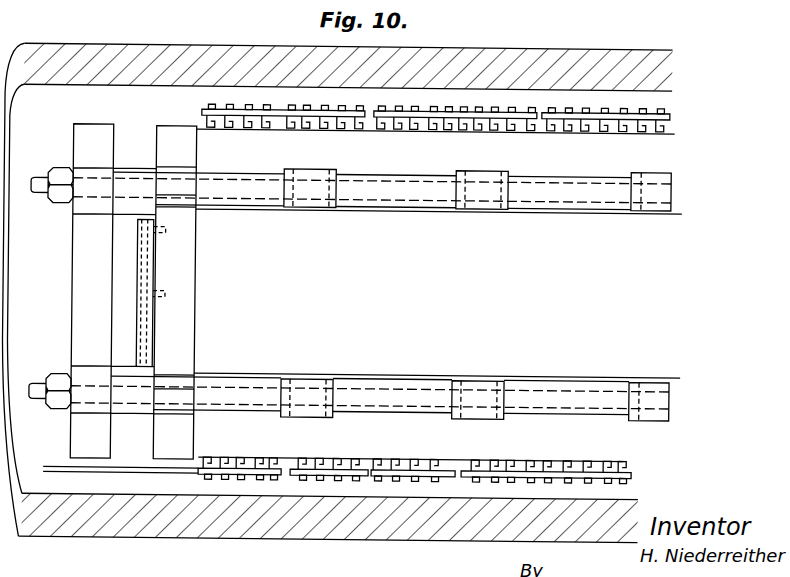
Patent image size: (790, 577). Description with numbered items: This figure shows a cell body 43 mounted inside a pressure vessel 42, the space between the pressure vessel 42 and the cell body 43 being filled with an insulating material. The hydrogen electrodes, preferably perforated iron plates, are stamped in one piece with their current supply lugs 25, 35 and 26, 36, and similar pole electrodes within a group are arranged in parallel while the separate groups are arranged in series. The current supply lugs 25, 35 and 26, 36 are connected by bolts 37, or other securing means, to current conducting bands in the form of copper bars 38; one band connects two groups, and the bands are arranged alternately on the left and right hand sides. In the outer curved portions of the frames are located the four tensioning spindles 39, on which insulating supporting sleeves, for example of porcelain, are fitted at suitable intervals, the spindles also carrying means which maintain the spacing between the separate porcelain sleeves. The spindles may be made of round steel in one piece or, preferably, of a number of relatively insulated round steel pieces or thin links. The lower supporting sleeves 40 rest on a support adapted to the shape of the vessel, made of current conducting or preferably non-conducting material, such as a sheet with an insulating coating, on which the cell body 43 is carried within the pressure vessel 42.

The current supply lug 25 is at (520, 125).
The current supply lug 26 is at (393, 125).
The current supply lug 35 is at (488, 125).
The current supply lug 36 is at (428, 125).
The bolt 37 is at (460, 102).
The copper bar 38 is at (560, 108).
The tensioning spindle 39 is at (39, 183).
The lower supporting sleeve 40 is at (127, 170).
The pressure vessel 42 is at (179, 68).
The cell body 43 is at (415, 295).